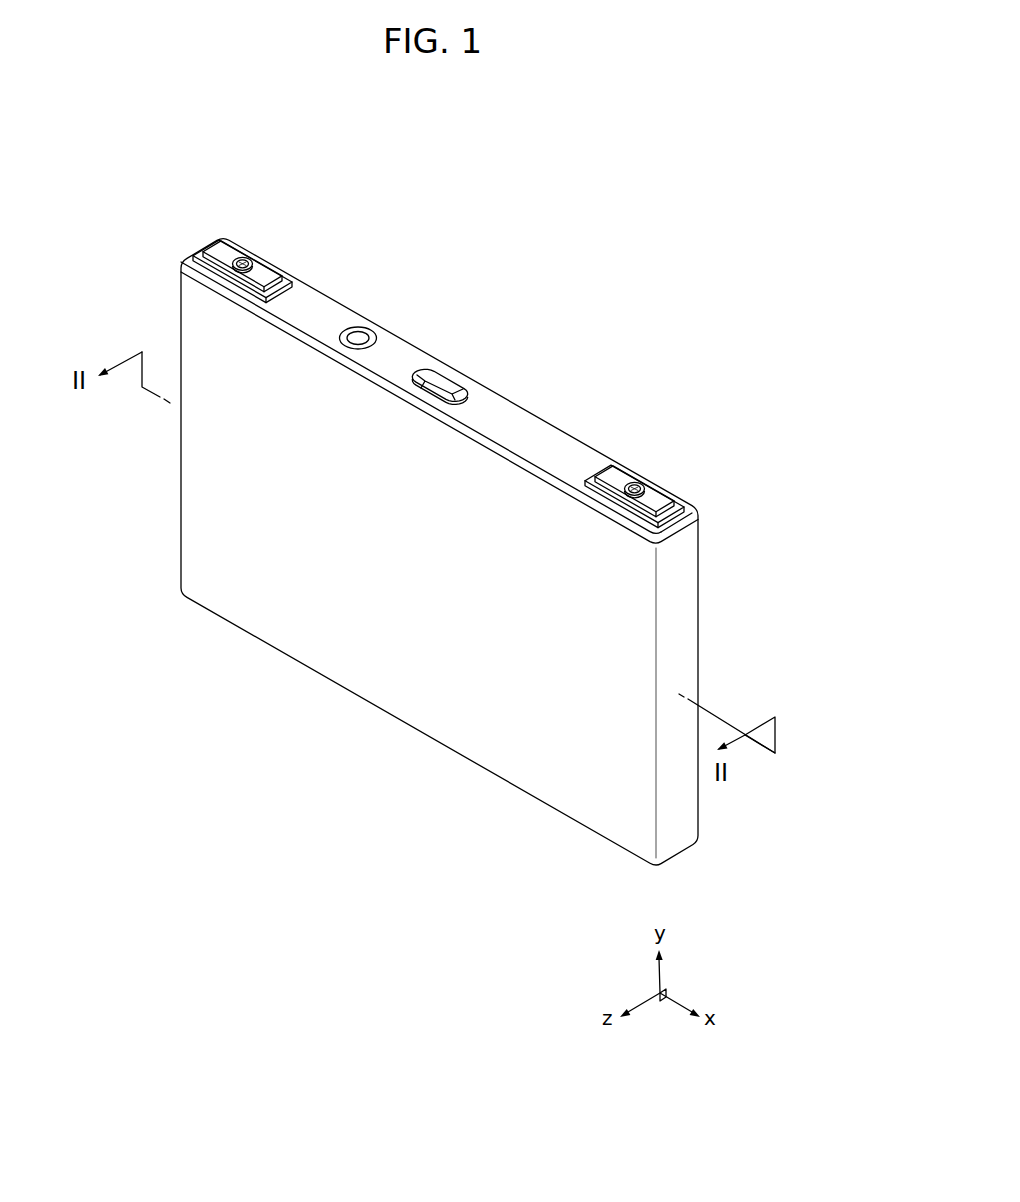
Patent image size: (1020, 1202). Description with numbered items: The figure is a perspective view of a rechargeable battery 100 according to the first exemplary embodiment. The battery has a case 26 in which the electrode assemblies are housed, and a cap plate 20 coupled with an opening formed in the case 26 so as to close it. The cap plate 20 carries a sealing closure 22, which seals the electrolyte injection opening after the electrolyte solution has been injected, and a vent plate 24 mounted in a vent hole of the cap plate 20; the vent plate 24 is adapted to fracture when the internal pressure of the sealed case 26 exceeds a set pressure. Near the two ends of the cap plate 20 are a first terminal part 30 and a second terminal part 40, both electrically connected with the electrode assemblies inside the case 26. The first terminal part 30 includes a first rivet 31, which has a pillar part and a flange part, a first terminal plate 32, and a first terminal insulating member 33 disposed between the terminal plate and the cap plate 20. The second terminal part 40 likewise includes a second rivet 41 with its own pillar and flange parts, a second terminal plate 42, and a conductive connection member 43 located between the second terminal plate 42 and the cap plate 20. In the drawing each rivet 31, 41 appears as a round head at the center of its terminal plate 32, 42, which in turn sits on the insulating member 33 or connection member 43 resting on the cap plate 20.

The rechargeable battery 100 is at (530, 240).
The cap plate 20 is at (527, 418).
The sealing closure 22 is at (358, 337).
The vent plate 24 is at (440, 386).
The case 26 is at (402, 693).
The first terminal part 30 is at (333, 236).
The first rivet 31 is at (243, 262).
The first terminal plate 32 is at (265, 272).
The first terminal insulating member 33 is at (292, 282).
The second terminal part 40 is at (728, 463).
The second rivet 41 is at (637, 488).
The second terminal plate 42 is at (660, 497).
The conductive connection member 43 is at (688, 507).